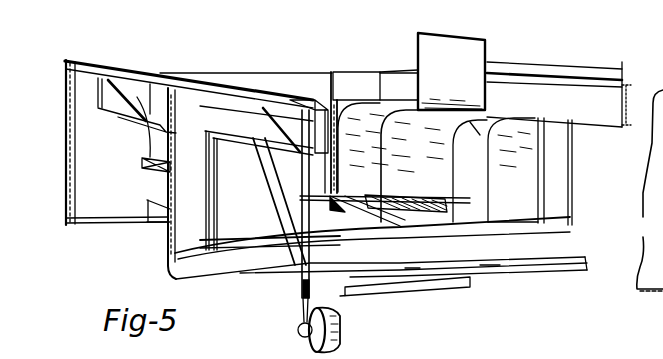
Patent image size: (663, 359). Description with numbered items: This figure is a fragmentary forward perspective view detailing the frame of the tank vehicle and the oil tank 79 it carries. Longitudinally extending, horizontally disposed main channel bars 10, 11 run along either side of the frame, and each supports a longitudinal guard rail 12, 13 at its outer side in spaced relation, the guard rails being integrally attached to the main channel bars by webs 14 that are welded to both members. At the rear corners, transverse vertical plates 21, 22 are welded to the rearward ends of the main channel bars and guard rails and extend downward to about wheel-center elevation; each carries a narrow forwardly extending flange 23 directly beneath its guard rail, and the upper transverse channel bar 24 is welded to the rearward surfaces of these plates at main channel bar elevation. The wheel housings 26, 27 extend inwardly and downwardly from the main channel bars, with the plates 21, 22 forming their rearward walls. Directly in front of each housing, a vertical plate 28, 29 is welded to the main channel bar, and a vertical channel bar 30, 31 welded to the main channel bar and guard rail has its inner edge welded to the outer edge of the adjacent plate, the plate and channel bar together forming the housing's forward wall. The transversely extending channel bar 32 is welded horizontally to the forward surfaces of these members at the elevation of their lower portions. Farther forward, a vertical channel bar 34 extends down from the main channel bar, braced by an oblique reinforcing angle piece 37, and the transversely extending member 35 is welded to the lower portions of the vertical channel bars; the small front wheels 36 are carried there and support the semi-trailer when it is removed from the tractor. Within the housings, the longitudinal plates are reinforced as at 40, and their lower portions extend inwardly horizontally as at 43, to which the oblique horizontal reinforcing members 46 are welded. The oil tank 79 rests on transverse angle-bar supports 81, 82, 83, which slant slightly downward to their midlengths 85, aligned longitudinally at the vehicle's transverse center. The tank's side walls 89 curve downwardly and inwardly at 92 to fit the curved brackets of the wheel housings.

The main channel bar 10 is at (603, 116).
The main channel bar 11 is at (100, 90).
The guard rail 12 is at (605, 71).
The guard rail 13 is at (125, 68).
The web 14 is at (137, 97).
The vertical plate 21 is at (348, 85).
The vertical plate 22 is at (85, 170).
The narrow flange 23 is at (69, 118).
The upper channel bar 24 is at (272, 78).
The wheel housing 26 is at (490, 138).
The wheel housing 27 is at (150, 177).
The vertical plate 28 is at (527, 189).
The vertical plate 29 is at (258, 230).
The vertical channel bar 30 is at (565, 168).
The vertical channel bar 31 is at (180, 229).
The transversely extending channel bar 32 is at (198, 275).
The vertical channel bar 34 is at (296, 280).
The transversely extending member 35 is at (363, 296).
The small front wheel 36 is at (331, 344).
The oblique reinforcing angle piece 37 is at (275, 183).
The reinforcement 40 is at (142, 162).
The inwardly extending portion 43 is at (355, 201).
The horizontal reinforcing member 46 is at (346, 219).
The oil tank 79 is at (460, 55).
The support 81 is at (338, 192).
The support 82 is at (495, 220).
The support 83 is at (573, 261).
The midlength 85 is at (392, 235).
The side wall 89 is at (420, 93).
The downwardly and inwardly curved portion 92 is at (432, 183).